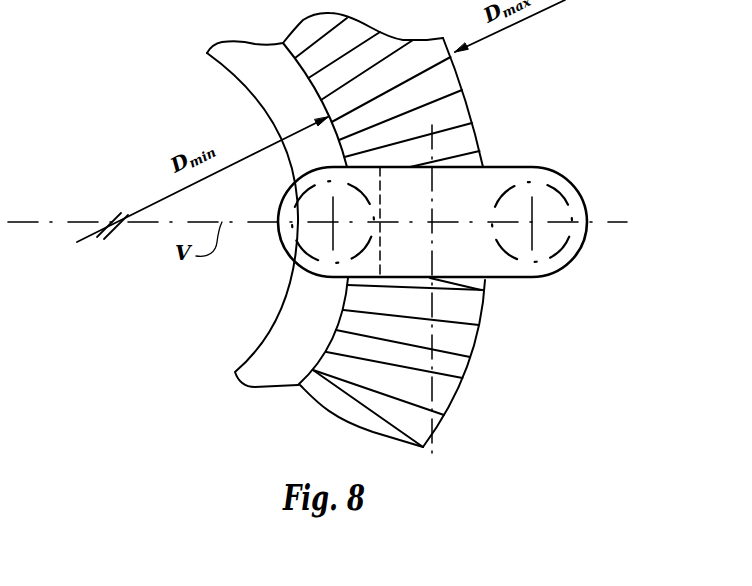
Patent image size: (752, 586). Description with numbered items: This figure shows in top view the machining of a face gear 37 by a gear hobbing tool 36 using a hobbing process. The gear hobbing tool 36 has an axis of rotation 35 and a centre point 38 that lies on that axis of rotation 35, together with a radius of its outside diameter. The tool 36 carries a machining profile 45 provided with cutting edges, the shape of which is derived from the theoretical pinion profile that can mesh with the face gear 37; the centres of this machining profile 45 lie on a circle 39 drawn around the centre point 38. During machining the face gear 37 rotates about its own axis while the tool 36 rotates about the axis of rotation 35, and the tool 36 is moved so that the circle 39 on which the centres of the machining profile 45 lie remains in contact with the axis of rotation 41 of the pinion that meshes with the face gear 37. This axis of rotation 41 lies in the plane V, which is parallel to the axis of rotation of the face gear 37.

The axis of rotation 35 is at (434, 400).
The gear hobbing tool 36 is at (527, 278).
The face gear 37 is at (460, 367).
The centre point 38 is at (438, 230).
The circle 39 is at (327, 227).
The axis of rotation of the pinion 41 is at (620, 222).
The machining profile 45 is at (565, 200).